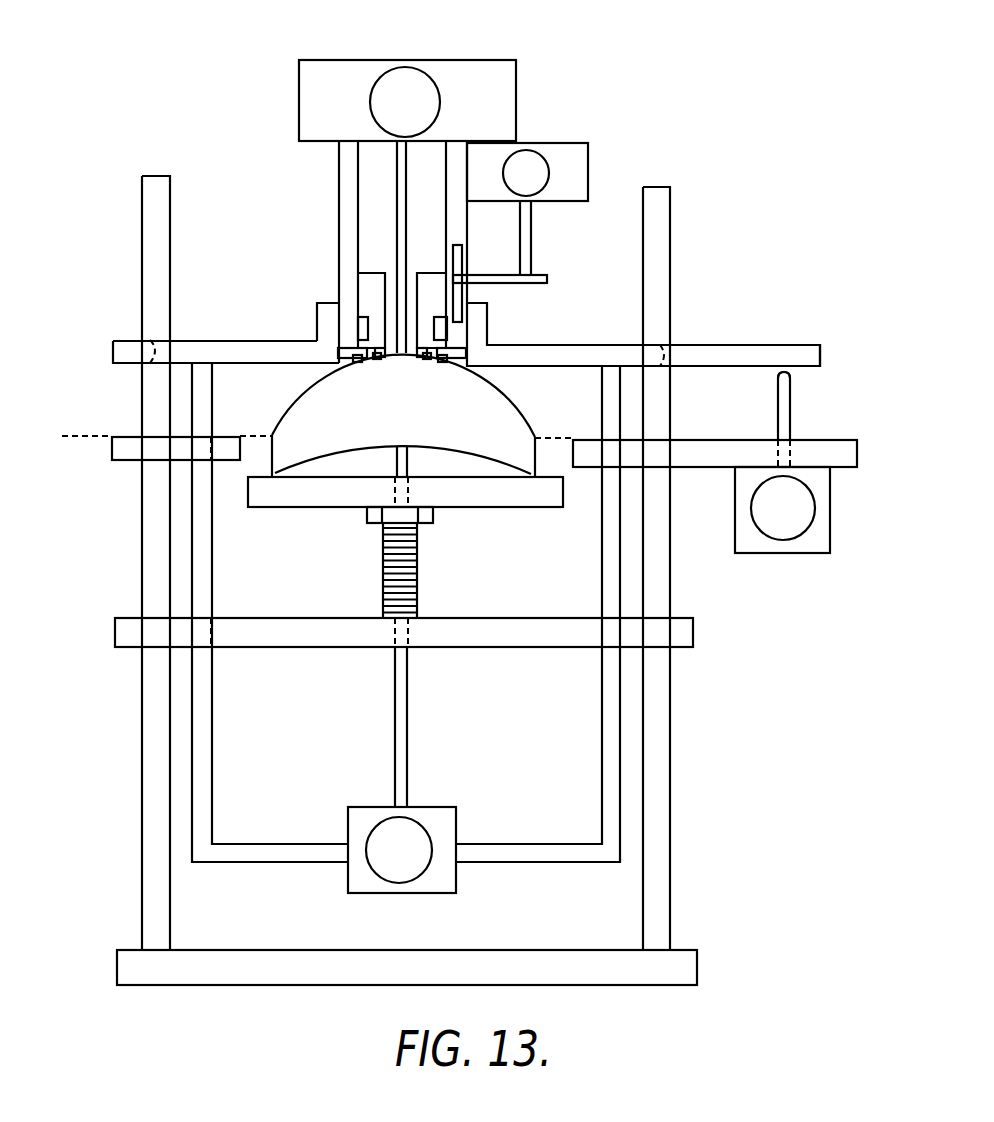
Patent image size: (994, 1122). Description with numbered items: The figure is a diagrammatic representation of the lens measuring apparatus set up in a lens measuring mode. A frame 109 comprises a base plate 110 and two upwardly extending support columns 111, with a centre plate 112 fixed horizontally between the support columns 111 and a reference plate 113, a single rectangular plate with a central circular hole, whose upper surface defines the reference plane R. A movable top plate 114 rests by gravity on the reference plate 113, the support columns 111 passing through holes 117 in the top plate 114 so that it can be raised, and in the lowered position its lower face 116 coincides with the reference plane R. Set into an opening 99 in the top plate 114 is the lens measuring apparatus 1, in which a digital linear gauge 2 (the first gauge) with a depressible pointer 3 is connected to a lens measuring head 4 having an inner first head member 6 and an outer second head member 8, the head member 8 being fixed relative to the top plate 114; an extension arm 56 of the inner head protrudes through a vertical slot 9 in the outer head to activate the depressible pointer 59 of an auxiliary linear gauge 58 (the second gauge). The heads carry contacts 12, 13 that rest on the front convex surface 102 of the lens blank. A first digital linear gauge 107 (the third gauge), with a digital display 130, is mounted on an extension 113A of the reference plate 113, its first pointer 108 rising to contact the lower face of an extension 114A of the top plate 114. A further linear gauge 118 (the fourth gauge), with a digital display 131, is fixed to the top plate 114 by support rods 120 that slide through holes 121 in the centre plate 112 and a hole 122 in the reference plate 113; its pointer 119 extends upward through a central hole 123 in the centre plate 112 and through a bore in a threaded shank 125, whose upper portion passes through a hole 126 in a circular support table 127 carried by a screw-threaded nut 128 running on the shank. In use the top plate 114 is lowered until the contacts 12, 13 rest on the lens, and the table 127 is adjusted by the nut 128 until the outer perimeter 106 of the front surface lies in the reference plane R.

The lens measuring apparatus 1 is at (322, 219).
The digital linear gauge 2 is at (480, 60).
The depressible pointer 3 is at (398, 178).
The lens measuring head 4 is at (488, 298).
The first head member 6 is at (360, 258).
The second head member 8 is at (342, 315).
The vertical slot 9 is at (462, 258).
The contacts 12 is at (423, 363).
The contacts 13 is at (358, 363).
The extension arm 56 is at (540, 272).
The auxiliary linear gauge 58 is at (553, 143).
The depressible pointer 59 is at (527, 242).
The opening 99 is at (350, 365).
The front convex surface 102 is at (290, 408).
The perimeter 106 is at (533, 438).
The first digital linear gauge 107 is at (766, 535).
The first pointer 108 is at (792, 420).
The frame 109 is at (410, 595).
The base plate 110 is at (140, 985).
The support columns 111 is at (670, 203).
The centre plate 112 is at (693, 637).
The reference plate 113 is at (128, 462).
The extension 113A is at (712, 418).
The movable top plate 114 is at (540, 347).
The extension 114A is at (723, 345).
The lower face 116 is at (793, 377).
The holes 117 is at (150, 340).
The further linear gauge 118 is at (380, 878).
The pointer 119 is at (408, 463).
The support rods 120 is at (603, 568).
The holes 121 is at (602, 660).
The hole 122 is at (205, 465).
The central hole 123 is at (395, 650).
The threaded shank 125 is at (418, 590).
The hole 126 is at (388, 492).
The support table 127 is at (513, 503).
The screw-threaded nut 128 is at (368, 527).
The digital display 130 is at (832, 535).
The digital display 131 is at (372, 868).
The reference plane R is at (88, 432).